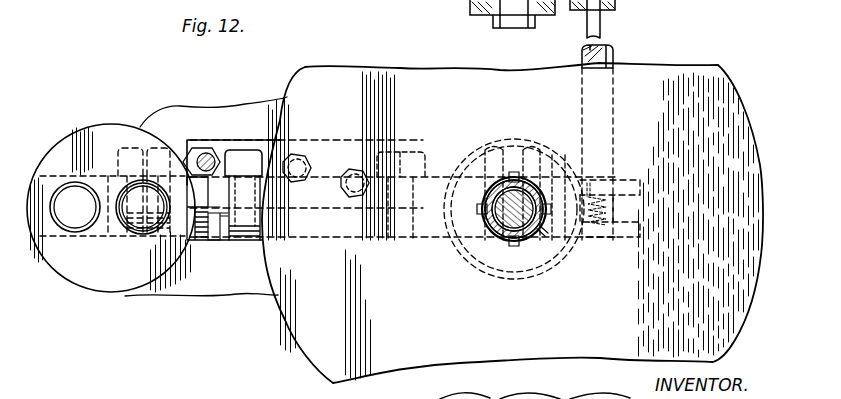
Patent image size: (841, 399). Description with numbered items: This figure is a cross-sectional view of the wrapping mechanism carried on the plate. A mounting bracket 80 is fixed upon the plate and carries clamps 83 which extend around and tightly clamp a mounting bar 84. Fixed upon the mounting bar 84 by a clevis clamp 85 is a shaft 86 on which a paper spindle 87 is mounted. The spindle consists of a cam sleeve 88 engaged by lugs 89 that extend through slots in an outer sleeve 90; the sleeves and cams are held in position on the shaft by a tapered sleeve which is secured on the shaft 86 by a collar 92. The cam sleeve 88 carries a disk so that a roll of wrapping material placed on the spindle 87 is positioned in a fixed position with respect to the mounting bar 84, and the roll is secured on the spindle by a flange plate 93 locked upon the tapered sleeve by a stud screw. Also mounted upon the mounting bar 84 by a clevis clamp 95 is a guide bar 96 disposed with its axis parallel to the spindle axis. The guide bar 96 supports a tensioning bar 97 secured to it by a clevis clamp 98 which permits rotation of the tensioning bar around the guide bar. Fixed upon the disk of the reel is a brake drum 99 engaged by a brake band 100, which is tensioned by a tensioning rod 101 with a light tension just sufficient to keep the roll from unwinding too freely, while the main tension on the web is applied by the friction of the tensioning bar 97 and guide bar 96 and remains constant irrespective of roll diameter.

The mounting bracket 80 is at (246, 150).
The clamps 83 is at (373, 222).
The mounting bar 84 is at (207, 240).
The clevis clamp 85 is at (483, 160).
The shaft 86 is at (525, 240).
The paper spindle 87 is at (543, 234).
The cam sleeve 88 is at (495, 233).
The lugs 89 is at (514, 173).
The outer sleeve 90 is at (533, 187).
The collar 92 is at (470, 22).
The flange plate 93 is at (320, 340).
The clevis clamp 95 is at (112, 172).
The guide bar 96 is at (133, 240).
The tensioning bar 97 is at (62, 235).
The clevis clamp 98 is at (201, 240).
The brake drum 99 is at (550, 160).
The brake band 100 is at (462, 158).
The tensioning rod 101 is at (607, 88).